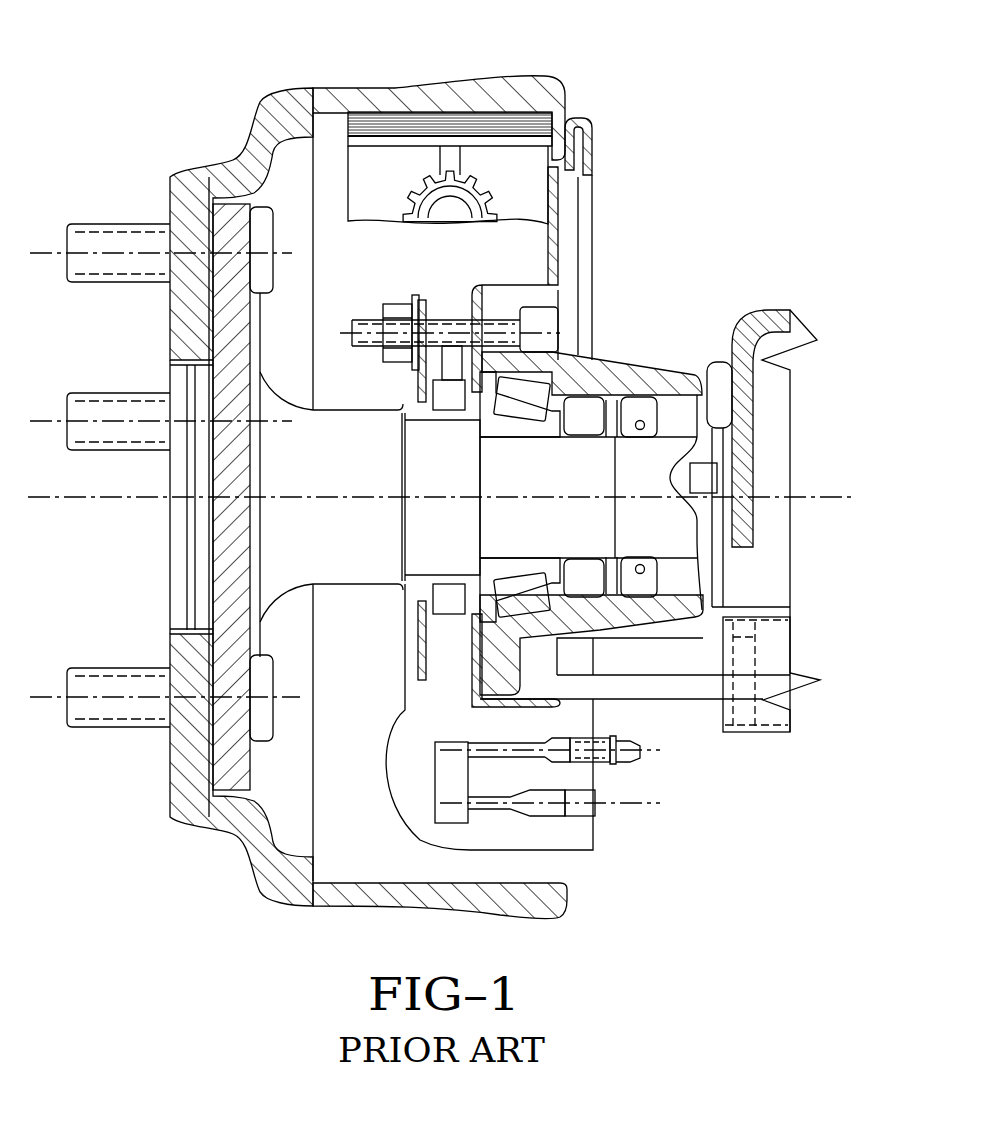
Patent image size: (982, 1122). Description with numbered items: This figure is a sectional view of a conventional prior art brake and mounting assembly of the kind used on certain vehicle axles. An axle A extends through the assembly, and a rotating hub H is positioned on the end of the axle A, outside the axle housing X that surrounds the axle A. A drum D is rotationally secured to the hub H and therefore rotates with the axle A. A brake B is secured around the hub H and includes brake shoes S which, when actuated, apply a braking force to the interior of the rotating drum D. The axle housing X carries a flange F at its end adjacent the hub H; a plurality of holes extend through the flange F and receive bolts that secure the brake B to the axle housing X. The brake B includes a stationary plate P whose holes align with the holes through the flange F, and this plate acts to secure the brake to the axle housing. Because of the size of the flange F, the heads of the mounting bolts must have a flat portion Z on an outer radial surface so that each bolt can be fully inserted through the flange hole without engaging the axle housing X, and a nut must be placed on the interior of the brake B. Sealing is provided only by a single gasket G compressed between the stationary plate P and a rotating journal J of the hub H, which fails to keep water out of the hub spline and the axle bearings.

The drum D is at (318, 98).
The brake shoes S is at (512, 125).
The brake B is at (567, 205).
The stationary plate P is at (552, 253).
The axle A is at (598, 462).
The flat portion Z is at (567, 363).
The rotating journal J is at (425, 378).
The rotating hub H is at (287, 538).
The gasket G is at (430, 622).
The flange F is at (492, 677).
The axle housing X is at (635, 607).